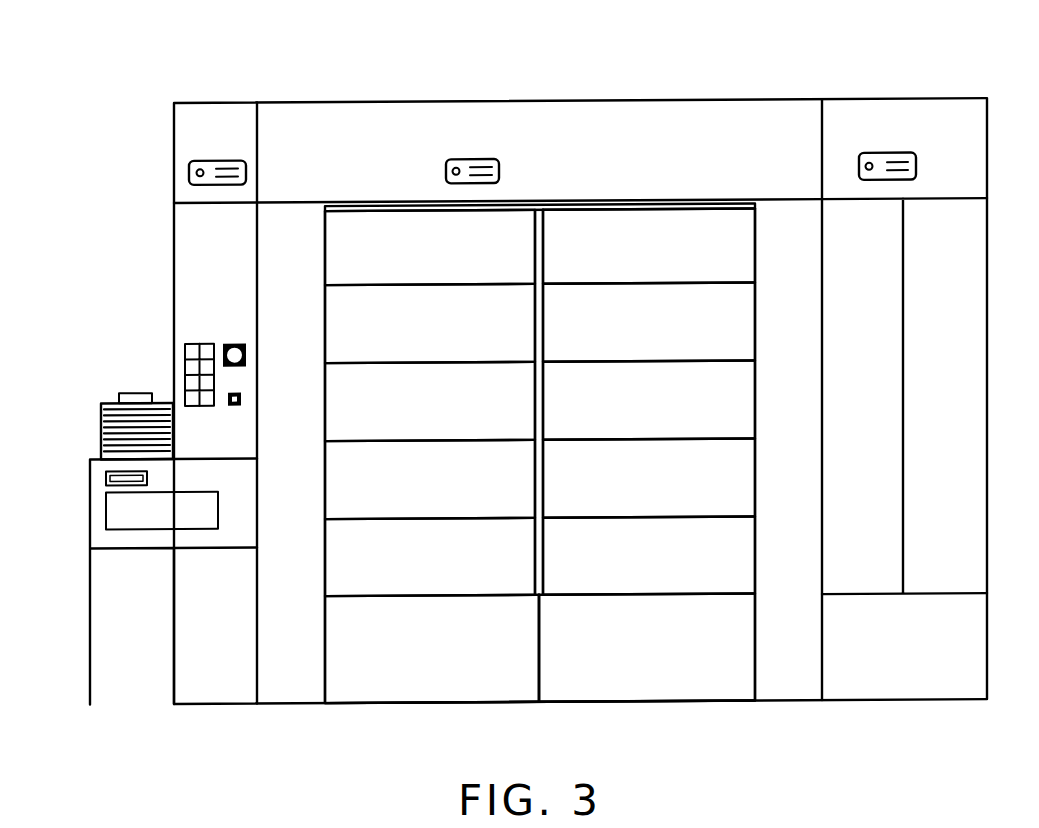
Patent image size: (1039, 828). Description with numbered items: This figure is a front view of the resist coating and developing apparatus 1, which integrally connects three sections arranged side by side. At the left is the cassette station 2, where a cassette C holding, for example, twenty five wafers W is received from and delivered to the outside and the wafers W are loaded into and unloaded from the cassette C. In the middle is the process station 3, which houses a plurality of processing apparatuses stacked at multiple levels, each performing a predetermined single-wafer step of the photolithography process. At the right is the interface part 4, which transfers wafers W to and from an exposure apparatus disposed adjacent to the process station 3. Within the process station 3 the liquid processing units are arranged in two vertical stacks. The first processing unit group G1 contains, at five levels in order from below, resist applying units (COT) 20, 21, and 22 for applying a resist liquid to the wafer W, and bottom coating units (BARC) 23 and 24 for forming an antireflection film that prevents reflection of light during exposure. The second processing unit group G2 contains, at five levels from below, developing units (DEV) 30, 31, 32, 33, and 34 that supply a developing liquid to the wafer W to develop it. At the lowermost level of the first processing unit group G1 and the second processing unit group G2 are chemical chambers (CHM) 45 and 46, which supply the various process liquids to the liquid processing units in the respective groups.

The resist coating and developing apparatus 1 is at (608, 76).
The cassette station 2 is at (226, 103).
The process station 3 is at (375, 103).
The interface part 4 is at (930, 103).
The resist applying unit (COT) 20 is at (325, 557).
The resist applying unit (COT) 21 is at (325, 480).
The resist applying unit (COT) 22 is at (325, 402).
The bottom coating unit (BARC) 23 is at (325, 324).
The bottom coating unit (BARC) 24 is at (325, 248).
The developing unit (DEV) 30 is at (755, 560).
The developing unit (DEV) 31 is at (755, 483).
The developing unit (DEV) 32 is at (755, 405).
The developing unit (DEV) 33 is at (755, 327).
The developing unit (DEV) 34 is at (755, 251).
The chemical chamber (CHM) 45 is at (445, 693).
The chemical chamber (CHM) 46 is at (664, 690).
The first processing unit group G1 is at (380, 208).
The second processing unit group G2 is at (648, 206).
The cassette C is at (99, 408).
The wafer W is at (112, 407).